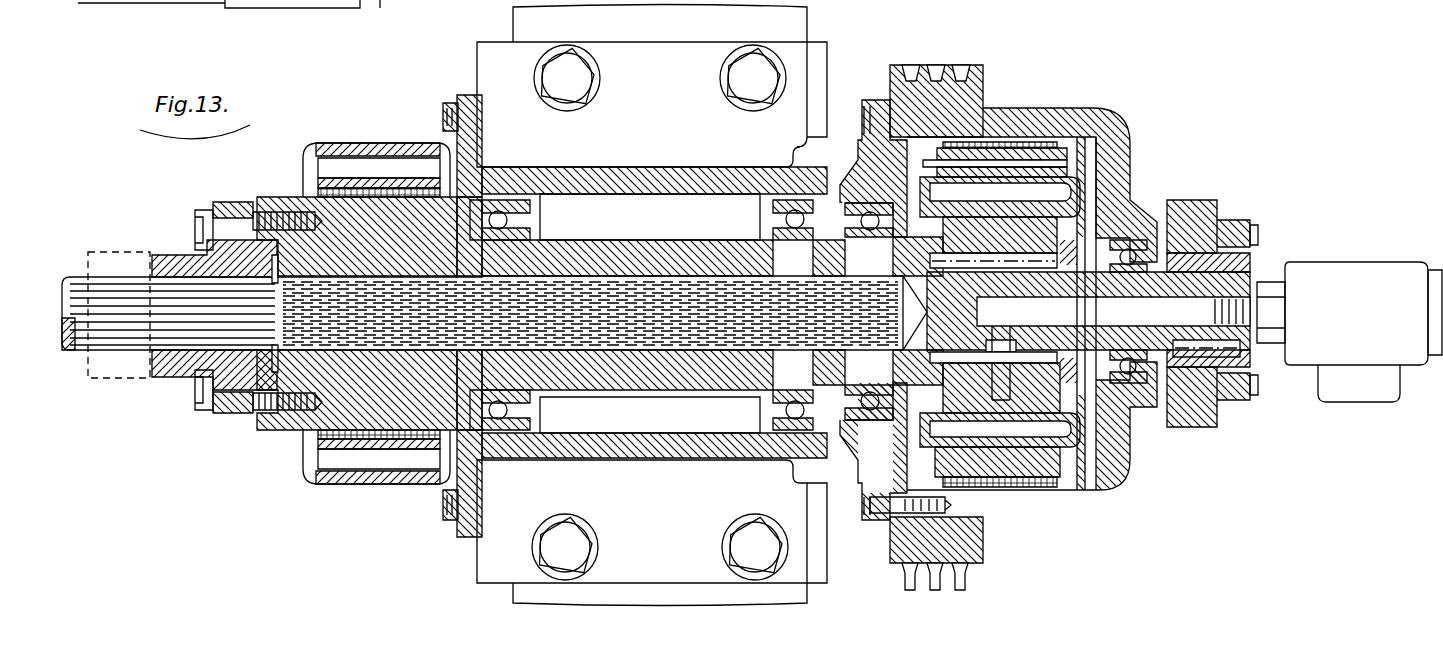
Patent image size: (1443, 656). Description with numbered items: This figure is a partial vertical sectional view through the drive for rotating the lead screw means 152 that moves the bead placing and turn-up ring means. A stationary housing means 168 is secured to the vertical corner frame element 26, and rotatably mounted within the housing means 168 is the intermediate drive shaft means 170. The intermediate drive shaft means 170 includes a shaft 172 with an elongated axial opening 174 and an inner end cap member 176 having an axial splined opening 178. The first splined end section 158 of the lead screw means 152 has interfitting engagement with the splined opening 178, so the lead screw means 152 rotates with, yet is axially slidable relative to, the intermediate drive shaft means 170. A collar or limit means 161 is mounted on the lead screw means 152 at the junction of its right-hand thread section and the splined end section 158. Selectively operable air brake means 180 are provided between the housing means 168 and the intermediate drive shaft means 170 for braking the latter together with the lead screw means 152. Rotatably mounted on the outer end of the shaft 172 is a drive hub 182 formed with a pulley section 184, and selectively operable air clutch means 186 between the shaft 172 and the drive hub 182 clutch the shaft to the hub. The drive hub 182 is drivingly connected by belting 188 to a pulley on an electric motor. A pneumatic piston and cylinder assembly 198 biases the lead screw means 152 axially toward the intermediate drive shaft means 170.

The vertical corner frame element 26 is at (790, 26).
The lead screw means 152 is at (88, 350).
The first splined end section 158 is at (97, 292).
The collar or limit means 161 is at (122, 362).
The stationary housing means 168 is at (636, 166).
The intermediate drive shaft means 170 is at (258, 197).
The shaft 172 is at (282, 196).
The elongated axial opening 174 is at (380, 289).
The inner end cap member 176 is at (222, 205).
The axial splined opening 178 is at (151, 292).
The air brake means 180 is at (365, 172).
The drive hub 182 is at (1097, 122).
The pulley section 184 is at (987, 76).
The air clutch means 186 is at (1062, 186).
The belting 188 is at (957, 62).
The pneumatic piston and cylinder assembly 198 is at (148, 8).